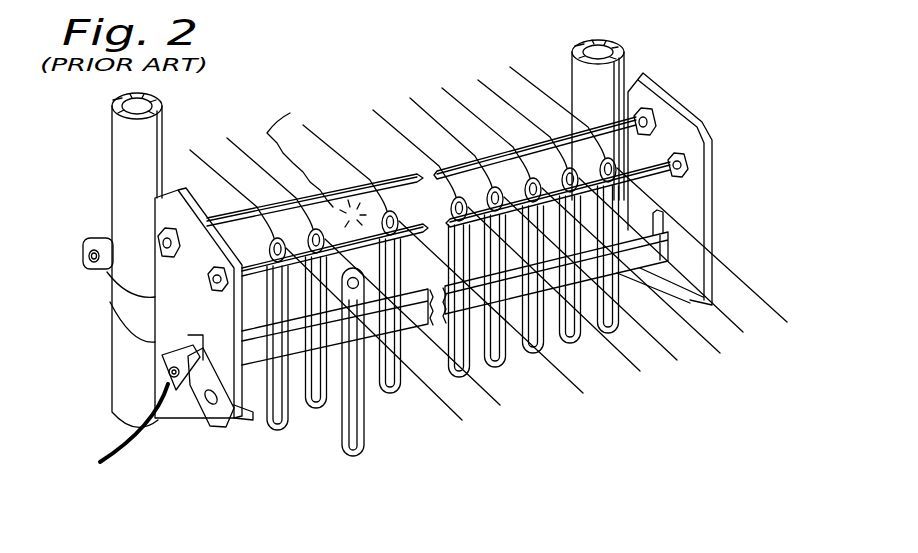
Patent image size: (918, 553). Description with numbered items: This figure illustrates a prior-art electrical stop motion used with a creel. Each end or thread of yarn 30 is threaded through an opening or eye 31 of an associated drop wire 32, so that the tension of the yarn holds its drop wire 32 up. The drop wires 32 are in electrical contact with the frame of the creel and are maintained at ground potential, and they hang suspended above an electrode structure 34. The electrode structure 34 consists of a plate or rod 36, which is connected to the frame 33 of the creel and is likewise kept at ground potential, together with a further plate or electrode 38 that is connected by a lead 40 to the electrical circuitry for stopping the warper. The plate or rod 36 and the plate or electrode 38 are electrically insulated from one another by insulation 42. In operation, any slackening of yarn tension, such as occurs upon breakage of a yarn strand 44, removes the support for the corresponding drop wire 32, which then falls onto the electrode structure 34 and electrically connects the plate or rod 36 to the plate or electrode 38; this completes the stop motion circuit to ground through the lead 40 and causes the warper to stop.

The yarn 30 is at (230, 142).
The eye 31 is at (255, 210).
The drop wire 32 is at (278, 436).
The frame 33 is at (707, 165).
The electrode structure 34 is at (245, 418).
The plate or rod 36 is at (268, 418).
The plate or electrode 38 is at (170, 373).
The lead 40 is at (107, 465).
The insulation 42 is at (185, 420).
The yarn strand 44 is at (316, 158).